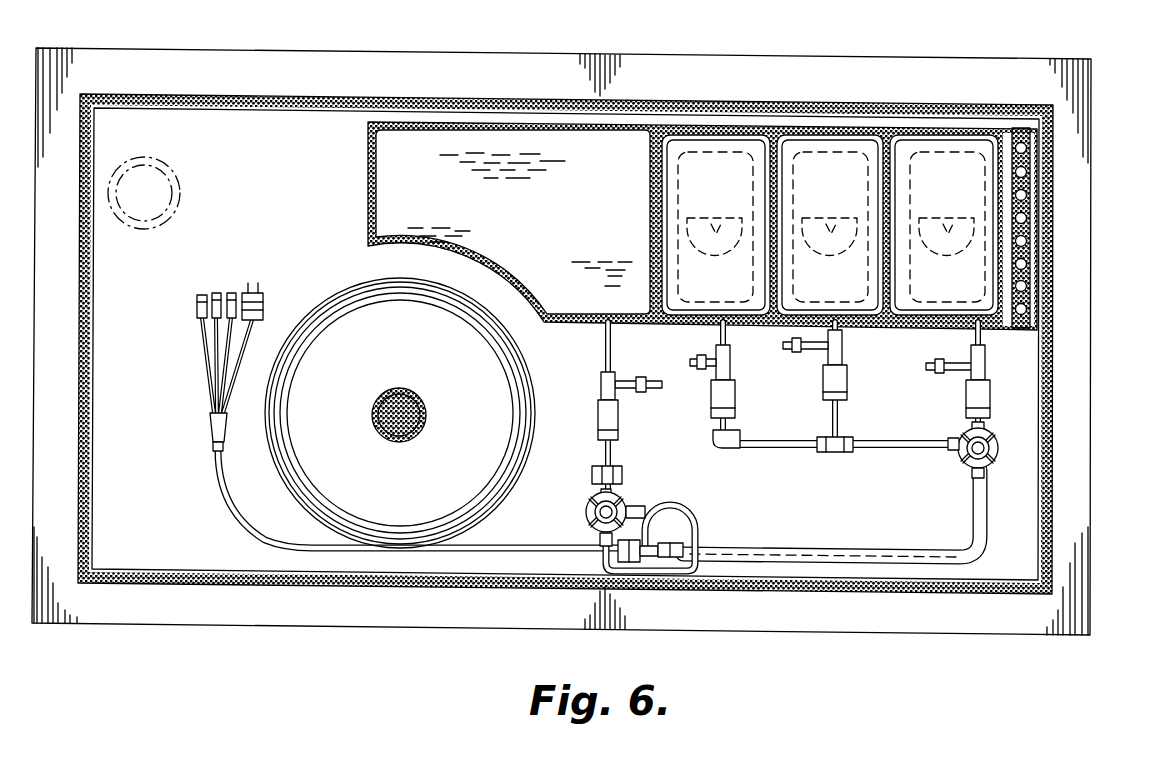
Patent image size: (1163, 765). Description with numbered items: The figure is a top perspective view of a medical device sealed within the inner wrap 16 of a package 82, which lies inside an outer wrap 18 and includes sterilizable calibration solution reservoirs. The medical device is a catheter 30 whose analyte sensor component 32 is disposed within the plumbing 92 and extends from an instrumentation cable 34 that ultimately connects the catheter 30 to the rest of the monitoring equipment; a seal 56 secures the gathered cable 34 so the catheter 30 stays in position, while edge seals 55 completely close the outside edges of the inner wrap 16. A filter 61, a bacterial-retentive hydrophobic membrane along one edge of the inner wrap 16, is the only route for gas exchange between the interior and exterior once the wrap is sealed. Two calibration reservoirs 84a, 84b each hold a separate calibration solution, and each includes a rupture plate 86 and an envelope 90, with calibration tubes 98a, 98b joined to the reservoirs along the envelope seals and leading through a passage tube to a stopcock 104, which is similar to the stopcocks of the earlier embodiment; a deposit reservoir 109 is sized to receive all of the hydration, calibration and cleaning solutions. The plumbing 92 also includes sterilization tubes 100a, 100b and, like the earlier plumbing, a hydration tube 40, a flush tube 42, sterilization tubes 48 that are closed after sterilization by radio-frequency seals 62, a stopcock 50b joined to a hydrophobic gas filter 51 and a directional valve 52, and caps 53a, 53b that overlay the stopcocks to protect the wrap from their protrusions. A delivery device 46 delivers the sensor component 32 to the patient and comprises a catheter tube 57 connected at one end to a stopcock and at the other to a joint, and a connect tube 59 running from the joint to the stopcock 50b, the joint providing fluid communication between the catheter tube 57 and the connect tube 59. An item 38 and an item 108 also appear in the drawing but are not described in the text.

The inner wrap 16 is at (147, 584).
The outer wrap 18 is at (176, 627).
The catheter 30 is at (335, 296).
The sensor component 32 is at (762, 548).
The instrumentation cable 34 is at (252, 328).
The tube connector 38 is at (650, 555).
The hydration tube 40 is at (984, 340).
The flush tube 42 is at (603, 344).
The delivery device 46 is at (816, 545).
The sterilization tubes 48 is at (601, 367).
The stopcock 50b is at (624, 499).
The gas filter 51 is at (646, 511).
The directional valve 52 is at (624, 474).
The cap 53a is at (958, 452).
The cap 53b is at (588, 500).
The edge seals 55 is at (262, 588).
The seal 56 is at (398, 442).
The catheter tube 57 is at (888, 551).
The connect tube 59 is at (698, 528).
The filter 61 is at (148, 157).
The seals 62 is at (641, 392).
The package 82 is at (372, 644).
The calibration reservoir 84a is at (678, 150).
The calibration reservoir 84b is at (793, 151).
The rupture plate 86 is at (713, 150).
The envelope 90 is at (745, 143).
The plumbing 92 is at (1003, 432).
The calibration tube 98a is at (731, 362).
The calibration tube 98b is at (843, 352).
The sterilization tube 100a is at (690, 362).
The sterilization tube 100b is at (806, 351).
The stopcock 104 is at (990, 468).
The indicator strip 108 is at (957, 151).
The deposit reservoir 109 is at (392, 177).